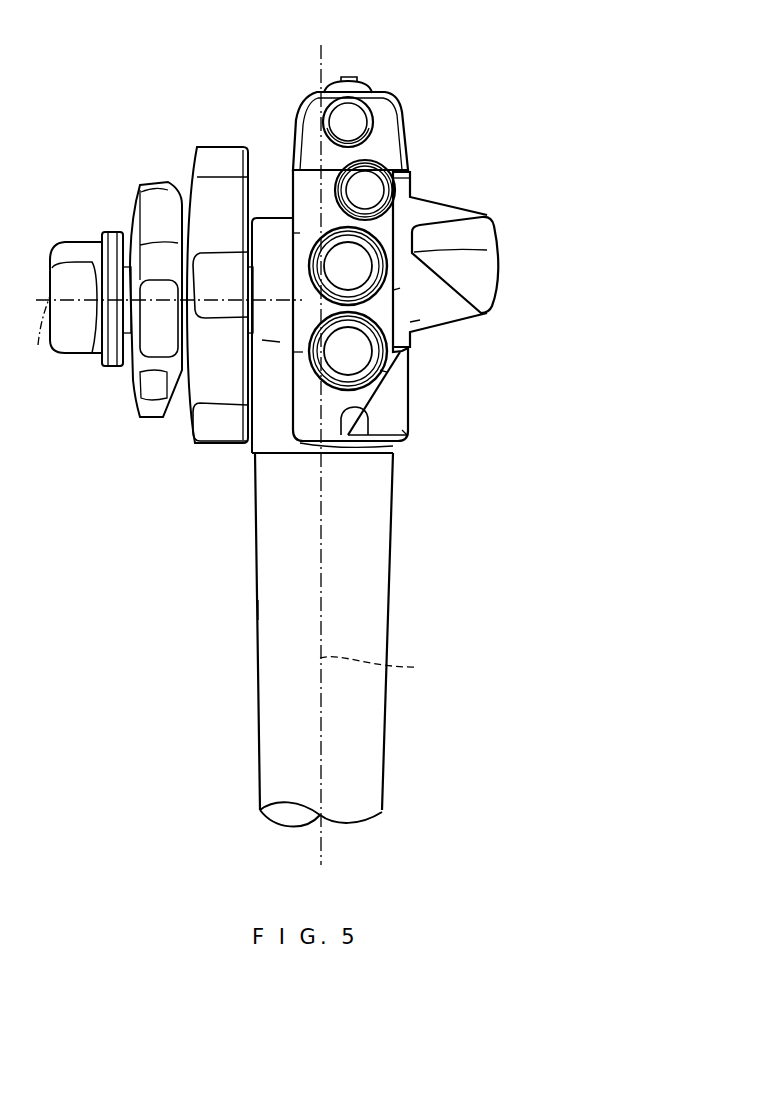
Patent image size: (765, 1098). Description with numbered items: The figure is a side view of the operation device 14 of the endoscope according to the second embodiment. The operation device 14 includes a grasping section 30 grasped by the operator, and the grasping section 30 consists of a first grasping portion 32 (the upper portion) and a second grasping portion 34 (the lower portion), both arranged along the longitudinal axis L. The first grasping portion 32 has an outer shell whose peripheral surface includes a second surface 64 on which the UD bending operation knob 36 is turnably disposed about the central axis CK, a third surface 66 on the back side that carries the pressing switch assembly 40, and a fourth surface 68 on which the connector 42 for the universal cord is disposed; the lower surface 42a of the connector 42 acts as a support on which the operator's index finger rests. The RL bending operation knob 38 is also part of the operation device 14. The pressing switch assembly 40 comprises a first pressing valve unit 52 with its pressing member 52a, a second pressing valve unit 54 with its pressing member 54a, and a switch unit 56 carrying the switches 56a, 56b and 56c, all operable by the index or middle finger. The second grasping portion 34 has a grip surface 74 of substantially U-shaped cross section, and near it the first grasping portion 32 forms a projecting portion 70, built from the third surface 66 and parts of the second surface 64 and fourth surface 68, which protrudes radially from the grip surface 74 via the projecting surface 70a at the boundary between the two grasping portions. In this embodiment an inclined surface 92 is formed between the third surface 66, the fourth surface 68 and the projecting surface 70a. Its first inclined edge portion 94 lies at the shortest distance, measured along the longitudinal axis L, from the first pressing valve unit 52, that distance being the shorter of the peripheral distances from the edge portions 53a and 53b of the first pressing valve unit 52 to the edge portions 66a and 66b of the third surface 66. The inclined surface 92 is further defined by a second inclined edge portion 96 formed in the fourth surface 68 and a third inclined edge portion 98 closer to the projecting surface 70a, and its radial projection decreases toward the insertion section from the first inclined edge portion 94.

The operation device 14 is at (318, 442).
The grasping section 30 is at (352, 268).
The first grasping portion 32 is at (292, 183).
The second grasping portion 34 is at (350, 639).
The UD bending operation knob 36 is at (203, 202).
The RL bending operation knob 38 is at (147, 213).
The pressing switch assembly 40 is at (498, 236).
The connector 42 is at (498, 292).
The lower surface 42a is at (412, 322).
The first pressing valve unit 52 is at (352, 352).
The pressing member 52a is at (386, 372).
The edge portion 53a is at (394, 350).
The edge portion 53b is at (291, 360).
The second pressing valve unit 54 is at (352, 270).
The pressing member 54a is at (386, 246).
The switch unit 56 is at (378, 94).
The switch 56a is at (368, 193).
The switch 56b is at (352, 122).
The switch 56c is at (350, 77).
The second surface 64 is at (258, 360).
The third surface 66 is at (412, 200).
The edge portion 66a is at (396, 289).
The edge portion 66b is at (291, 233).
The fourth surface 68 is at (413, 183).
The projecting portion 70 is at (280, 342).
The projecting surface 70a is at (297, 456).
The grip surface 74 is at (355, 592).
The inclined surface 92 is at (410, 436).
The first inclined edge portion 94 is at (338, 440).
The second inclined edge portion 96 is at (410, 405).
The third inclined edge portion 98 is at (378, 456).
The longitudinal axis L is at (378, 669).
The central axis CK is at (163, 306).